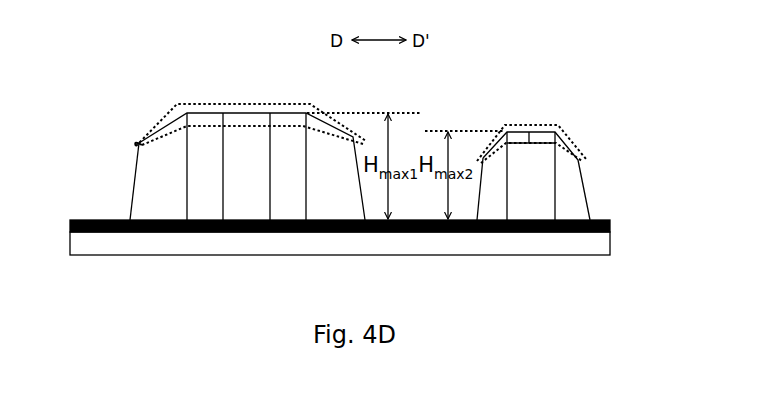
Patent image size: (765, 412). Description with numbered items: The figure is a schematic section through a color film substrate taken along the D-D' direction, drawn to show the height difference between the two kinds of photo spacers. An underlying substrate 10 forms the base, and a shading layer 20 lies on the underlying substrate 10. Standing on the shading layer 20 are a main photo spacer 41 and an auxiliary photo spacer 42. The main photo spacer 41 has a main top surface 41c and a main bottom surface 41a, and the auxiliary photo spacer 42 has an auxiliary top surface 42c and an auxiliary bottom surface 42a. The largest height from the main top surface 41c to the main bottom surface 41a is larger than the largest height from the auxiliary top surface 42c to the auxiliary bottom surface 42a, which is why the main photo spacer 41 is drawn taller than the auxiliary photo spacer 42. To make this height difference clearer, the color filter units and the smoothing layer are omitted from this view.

The underlying substrate 10 is at (600, 240).
The shading layer 20 is at (612, 225).
The main photo spacer 41 is at (230, 197).
The main bottom surface 41a is at (127, 200).
The main top surface 41c is at (312, 110).
The auxiliary photo spacer 42 is at (512, 207).
The auxiliary bottom surface 42a is at (540, 220).
The auxiliary top surface 42c is at (532, 122).